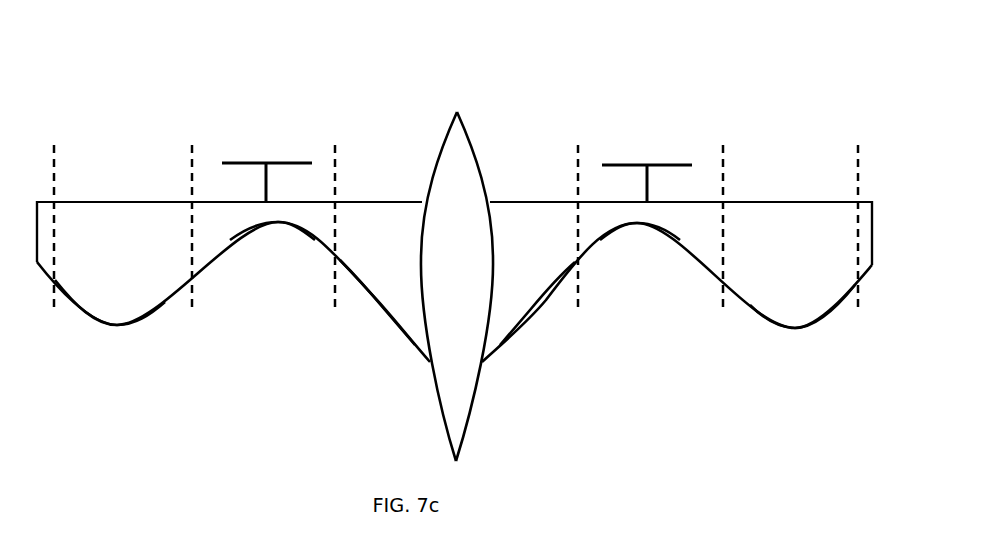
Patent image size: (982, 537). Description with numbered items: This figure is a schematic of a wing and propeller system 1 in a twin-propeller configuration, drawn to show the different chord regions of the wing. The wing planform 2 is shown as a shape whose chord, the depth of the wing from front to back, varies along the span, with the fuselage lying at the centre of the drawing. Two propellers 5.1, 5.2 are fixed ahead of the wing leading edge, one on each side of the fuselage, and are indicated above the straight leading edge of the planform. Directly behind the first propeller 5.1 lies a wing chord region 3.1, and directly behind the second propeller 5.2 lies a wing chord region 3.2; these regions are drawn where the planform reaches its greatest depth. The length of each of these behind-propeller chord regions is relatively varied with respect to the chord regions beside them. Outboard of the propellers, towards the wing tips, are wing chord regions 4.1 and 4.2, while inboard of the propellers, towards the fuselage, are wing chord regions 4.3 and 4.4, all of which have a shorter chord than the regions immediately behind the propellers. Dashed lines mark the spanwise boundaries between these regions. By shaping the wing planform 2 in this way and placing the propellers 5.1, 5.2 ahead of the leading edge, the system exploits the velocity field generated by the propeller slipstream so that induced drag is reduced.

The wing and propeller system 1 is at (783, 51).
The wing planform 2 is at (842, 313).
The wing chord region behind first propeller 3.1 is at (268, 223).
The wing chord region behind second propeller 3.2 is at (648, 228).
The outboard wing chord region 4.1 is at (136, 308).
The outboard wing chord region 4.2 is at (798, 332).
The inboard wing chord region 4.3 is at (377, 300).
The inboard wing chord region 4.4 is at (547, 300).
The first propeller 5.1 is at (258, 157).
The second propeller 5.2 is at (658, 157).